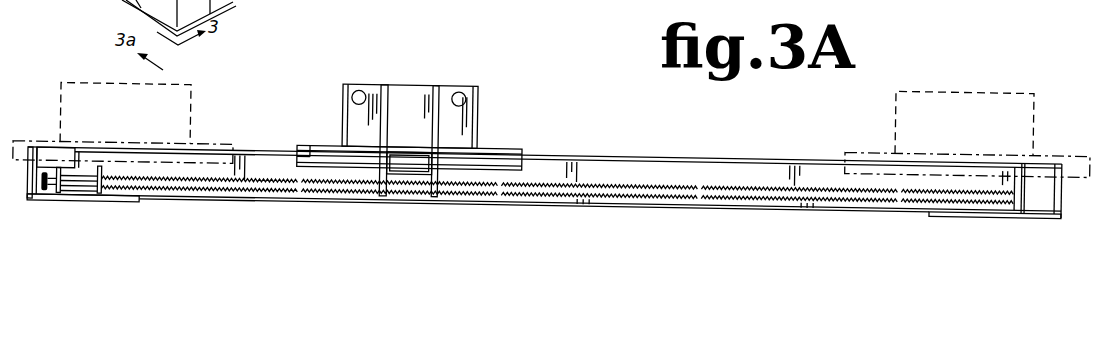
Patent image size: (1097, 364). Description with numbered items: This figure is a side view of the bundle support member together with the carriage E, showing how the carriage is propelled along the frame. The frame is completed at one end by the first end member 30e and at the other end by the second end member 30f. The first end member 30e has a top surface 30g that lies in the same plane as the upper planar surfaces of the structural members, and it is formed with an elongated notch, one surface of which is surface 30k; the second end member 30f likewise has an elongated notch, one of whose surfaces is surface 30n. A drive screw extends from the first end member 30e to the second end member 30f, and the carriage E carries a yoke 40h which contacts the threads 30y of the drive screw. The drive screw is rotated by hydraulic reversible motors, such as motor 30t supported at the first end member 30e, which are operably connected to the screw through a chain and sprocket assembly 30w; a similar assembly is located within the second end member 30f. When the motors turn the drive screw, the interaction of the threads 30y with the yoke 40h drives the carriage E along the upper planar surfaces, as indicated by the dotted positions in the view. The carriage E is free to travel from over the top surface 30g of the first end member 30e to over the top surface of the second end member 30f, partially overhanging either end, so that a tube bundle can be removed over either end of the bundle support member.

The threads 30y is at (277, 180).
The carriage E is at (482, 86).
The yoke 40h is at (362, 181).
The first end member 30e is at (86, 208).
The second end member 30f is at (992, 222).
The notch surface 30n is at (9, 234).
The chain and sprocket assembly 30w is at (87, 0).
The notch surface 30k is at (120, 7).
The hydraulic reversible motor 30t is at (233, 0).
The top surface 30g is at (263, 0).